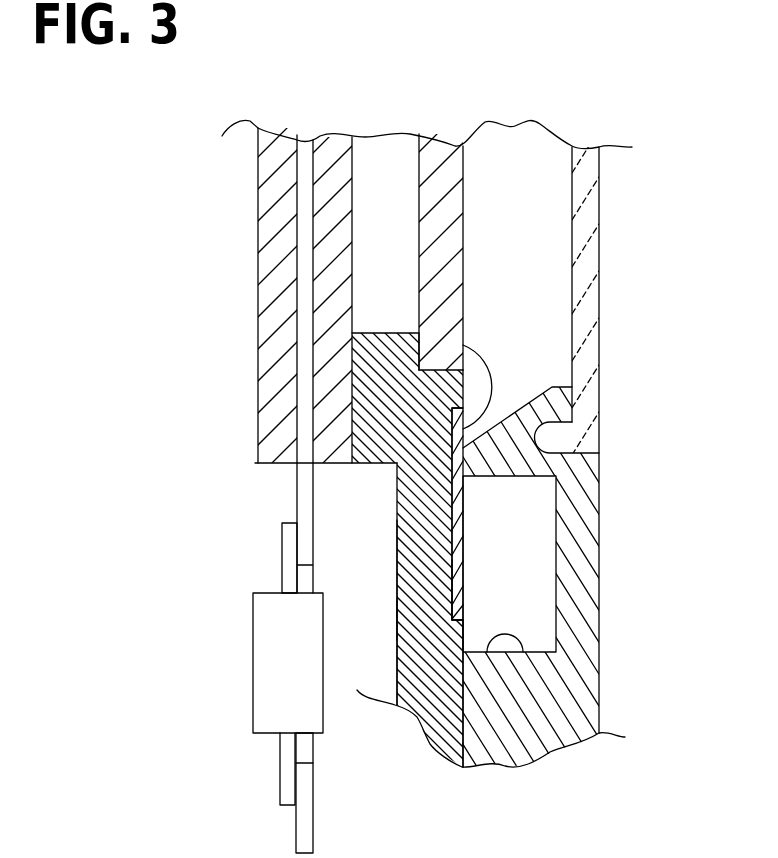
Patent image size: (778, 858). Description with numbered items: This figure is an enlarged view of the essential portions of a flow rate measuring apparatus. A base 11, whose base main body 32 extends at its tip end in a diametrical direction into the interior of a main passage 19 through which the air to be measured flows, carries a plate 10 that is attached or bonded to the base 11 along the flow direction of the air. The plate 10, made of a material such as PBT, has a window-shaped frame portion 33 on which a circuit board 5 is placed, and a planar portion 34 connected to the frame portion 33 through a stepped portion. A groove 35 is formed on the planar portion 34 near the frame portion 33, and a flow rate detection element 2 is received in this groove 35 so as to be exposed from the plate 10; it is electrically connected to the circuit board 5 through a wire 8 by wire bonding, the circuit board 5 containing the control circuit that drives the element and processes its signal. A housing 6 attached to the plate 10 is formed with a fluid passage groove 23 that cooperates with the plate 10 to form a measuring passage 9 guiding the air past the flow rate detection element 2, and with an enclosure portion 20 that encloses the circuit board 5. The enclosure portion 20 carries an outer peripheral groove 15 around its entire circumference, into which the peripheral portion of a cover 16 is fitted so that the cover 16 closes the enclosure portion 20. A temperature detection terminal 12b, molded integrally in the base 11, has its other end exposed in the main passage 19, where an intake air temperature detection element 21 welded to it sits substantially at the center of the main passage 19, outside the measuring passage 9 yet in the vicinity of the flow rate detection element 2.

The base 11 is at (258, 238).
The base main body 32 is at (273, 420).
The frame portion 33 is at (380, 363).
The circuit board 5 is at (442, 215).
The cover 16 is at (600, 253).
The enclosure portion 20 is at (522, 300).
The wire 8 is at (492, 372).
The outer peripheral groove 15 is at (547, 433).
The flow rate detection element 2 is at (463, 528).
The measuring passage 9 is at (518, 585).
The housing 6 is at (570, 680).
The fluid passage groove 23 is at (503, 650).
The plate 10 is at (440, 717).
The groove 35 is at (455, 578).
The planar portion 34 is at (415, 603).
The temperature detection terminal 12b is at (303, 500).
The main passage 19 is at (272, 510).
The intake air temperature detection element 21 is at (278, 648).